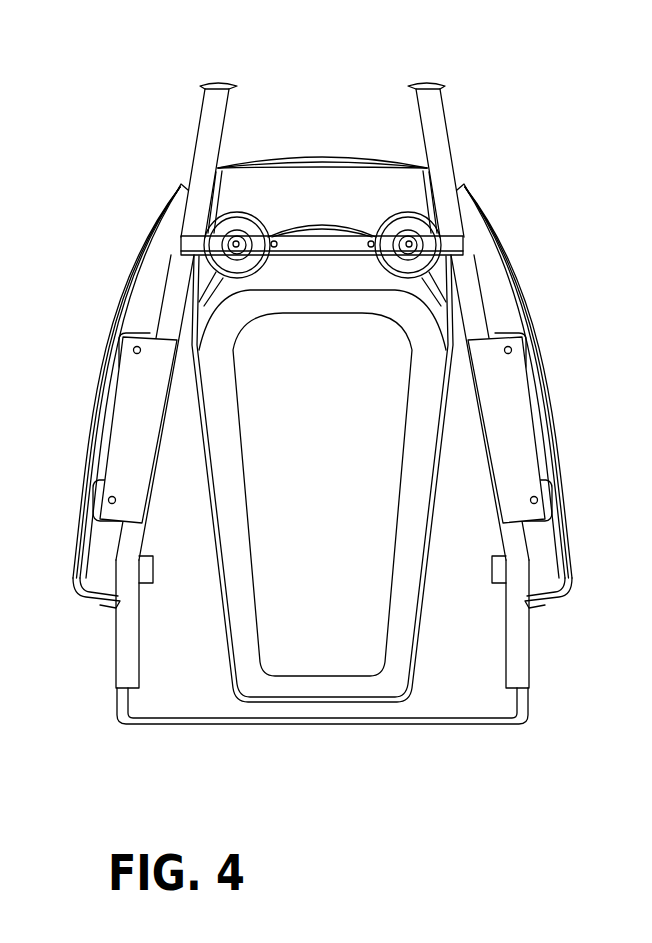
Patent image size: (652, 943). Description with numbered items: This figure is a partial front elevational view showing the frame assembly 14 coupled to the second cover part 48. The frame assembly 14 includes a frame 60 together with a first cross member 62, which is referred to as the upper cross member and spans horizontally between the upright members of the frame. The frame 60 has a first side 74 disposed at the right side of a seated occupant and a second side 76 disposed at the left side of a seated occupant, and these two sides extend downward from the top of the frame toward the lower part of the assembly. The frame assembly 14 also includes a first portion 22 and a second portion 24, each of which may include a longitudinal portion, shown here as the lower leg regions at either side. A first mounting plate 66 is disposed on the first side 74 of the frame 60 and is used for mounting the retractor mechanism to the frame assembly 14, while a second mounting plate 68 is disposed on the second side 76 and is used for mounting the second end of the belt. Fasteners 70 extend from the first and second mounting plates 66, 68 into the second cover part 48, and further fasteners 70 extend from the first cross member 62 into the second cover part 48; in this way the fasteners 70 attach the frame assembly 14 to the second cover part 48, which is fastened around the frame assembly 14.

The frame assembly 14 is at (488, 268).
The first portion 22 is at (118, 616).
The second portion 24 is at (527, 606).
The second cover part 48 is at (285, 190).
The frame 60 is at (434, 124).
The first cross member 62 is at (322, 243).
The first mounting plate 66 is at (137, 395).
The second mounting plate 68 is at (503, 423).
The fasteners 70 is at (236, 244).
The first side 74 is at (177, 295).
The second side 76 is at (469, 312).